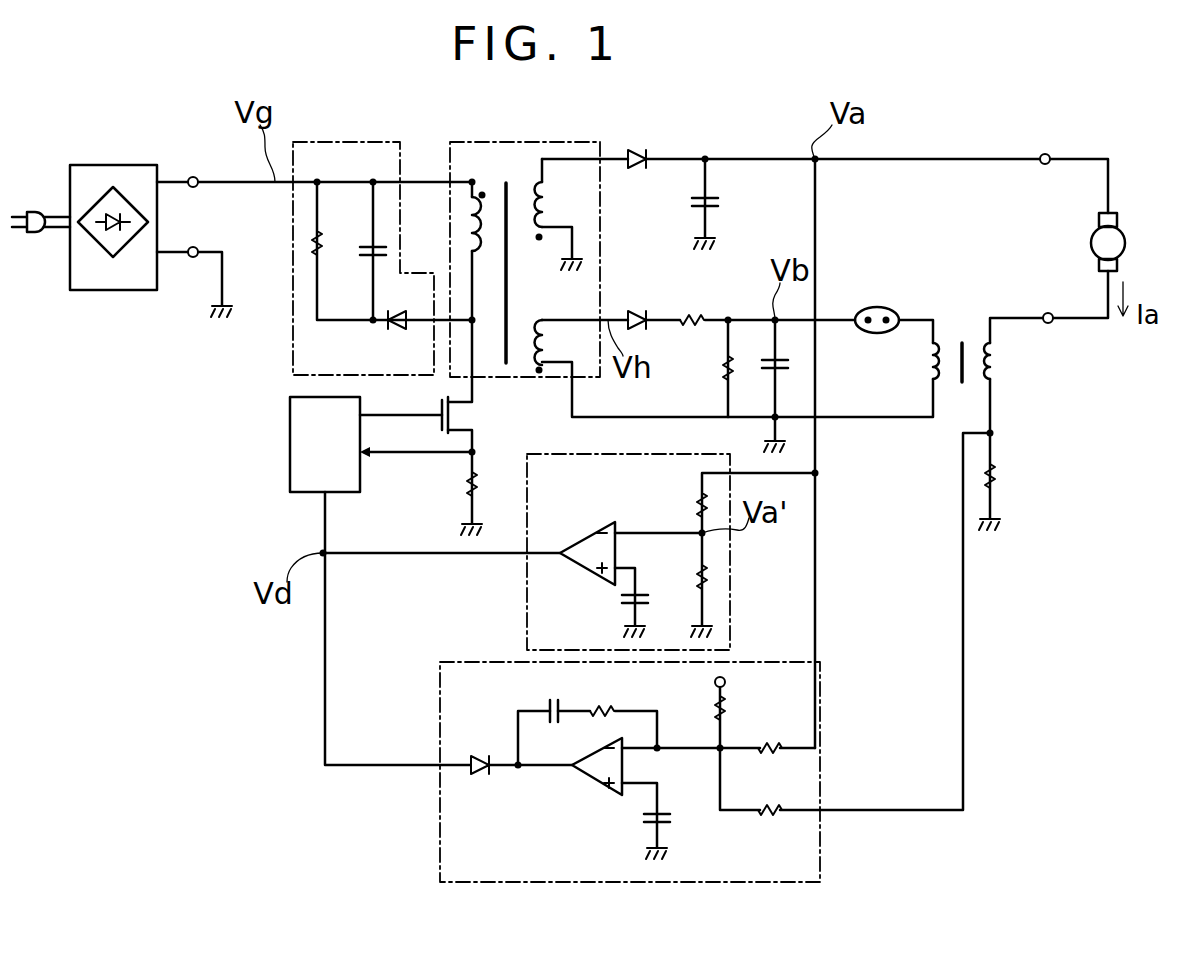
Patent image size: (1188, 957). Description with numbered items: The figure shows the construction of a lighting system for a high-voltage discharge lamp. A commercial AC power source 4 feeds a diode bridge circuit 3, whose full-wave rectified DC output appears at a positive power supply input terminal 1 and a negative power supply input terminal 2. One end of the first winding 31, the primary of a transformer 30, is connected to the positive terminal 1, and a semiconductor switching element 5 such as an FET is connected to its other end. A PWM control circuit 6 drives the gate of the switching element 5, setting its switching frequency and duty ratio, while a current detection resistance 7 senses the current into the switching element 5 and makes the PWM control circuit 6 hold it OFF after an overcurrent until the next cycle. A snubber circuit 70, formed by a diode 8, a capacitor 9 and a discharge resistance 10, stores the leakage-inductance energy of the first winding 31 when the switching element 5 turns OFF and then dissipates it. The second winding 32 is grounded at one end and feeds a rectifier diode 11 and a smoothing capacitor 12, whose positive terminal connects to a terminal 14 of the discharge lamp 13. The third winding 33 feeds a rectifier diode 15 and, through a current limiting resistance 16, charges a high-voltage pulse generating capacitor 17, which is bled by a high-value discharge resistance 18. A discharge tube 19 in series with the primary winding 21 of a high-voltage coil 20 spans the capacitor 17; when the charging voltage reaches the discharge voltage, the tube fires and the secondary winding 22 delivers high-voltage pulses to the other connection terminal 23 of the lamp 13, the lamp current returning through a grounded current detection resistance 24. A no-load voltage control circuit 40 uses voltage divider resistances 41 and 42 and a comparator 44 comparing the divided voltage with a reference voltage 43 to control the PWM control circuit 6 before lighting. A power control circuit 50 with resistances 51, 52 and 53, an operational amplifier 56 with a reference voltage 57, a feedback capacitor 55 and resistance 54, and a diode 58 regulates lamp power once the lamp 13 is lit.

The positive power supply input terminal 1 is at (193, 177).
The negative power supply input terminal 2 is at (193, 257).
The diode bridge circuit 3 is at (111, 165).
The commercial AC power source 4 is at (40, 212).
The semiconductor switching element 5 is at (458, 410).
The PWM control circuit 6 is at (290, 448).
The current detection resistance 7 is at (480, 485).
The diode 8 is at (400, 329).
The capacitor 9 is at (360, 251).
The discharge resistance 10 is at (310, 243).
The rectifier diode 11 is at (637, 150).
The smoothing capacitor 12 is at (720, 202).
The discharge lamp 13 is at (1124, 250).
The terminal 14 is at (1048, 154).
The rectifier diode 15 is at (637, 311).
The current limiting resistance 16 is at (686, 312).
The high-voltage pulse generating capacitor 17 is at (789, 366).
The discharge resistance 18 is at (722, 368).
The discharge tube 19 is at (870, 308).
The high-voltage coil 20 is at (970, 328).
The primary winding 21 is at (940, 360).
The secondary winding 22 is at (996, 362).
The connection terminal 23 is at (1052, 322).
The current detection resistance 24 is at (996, 478).
The transformer 30 is at (520, 142).
The first winding 31 is at (476, 226).
The second winding 32 is at (530, 205).
The third winding 33 is at (530, 338).
The no-load voltage control circuit 40 is at (730, 600).
The voltage divider resistance 41 is at (696, 506).
The voltage divider resistance 42 is at (696, 580).
The reference voltage 43 is at (628, 600).
The comparator 44 is at (568, 560).
The power control circuit 50 is at (820, 690).
The resistance 51 is at (770, 740).
The resistance 52 is at (715, 708).
The resistance 53 is at (770, 818).
The resistance 54 is at (600, 702).
The capacitor 55 is at (553, 698).
The operational amplifier 56 is at (592, 780).
The reference voltage 57 is at (670, 815).
The diode 58 is at (485, 775).
The snubber circuit 70 is at (360, 142).